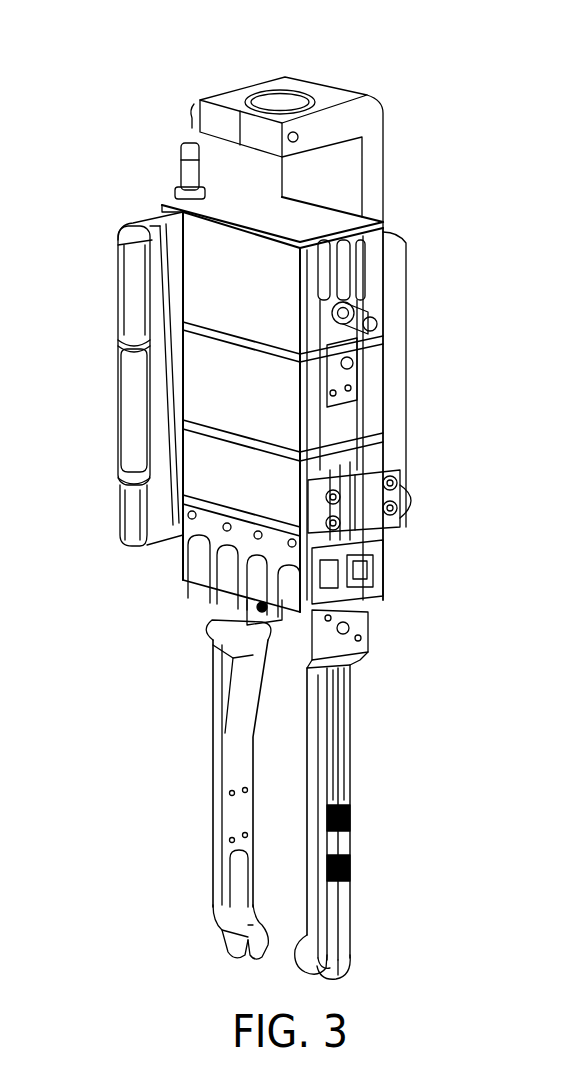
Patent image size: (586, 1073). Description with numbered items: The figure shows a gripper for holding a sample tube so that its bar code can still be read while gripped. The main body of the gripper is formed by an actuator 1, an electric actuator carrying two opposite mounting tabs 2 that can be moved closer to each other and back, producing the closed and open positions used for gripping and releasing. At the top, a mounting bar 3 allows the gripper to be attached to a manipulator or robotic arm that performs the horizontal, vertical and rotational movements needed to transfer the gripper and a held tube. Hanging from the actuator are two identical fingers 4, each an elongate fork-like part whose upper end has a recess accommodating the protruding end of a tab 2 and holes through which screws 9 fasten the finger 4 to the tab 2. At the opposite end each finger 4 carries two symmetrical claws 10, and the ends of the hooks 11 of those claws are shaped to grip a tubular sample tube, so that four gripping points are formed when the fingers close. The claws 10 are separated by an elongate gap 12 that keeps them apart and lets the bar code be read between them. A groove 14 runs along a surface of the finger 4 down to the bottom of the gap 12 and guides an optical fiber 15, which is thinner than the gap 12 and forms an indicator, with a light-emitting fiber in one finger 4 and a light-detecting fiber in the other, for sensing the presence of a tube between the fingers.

The actuator 1 is at (283, 418).
The mounting tab 2 is at (363, 622).
The mounting bar 3 is at (332, 98).
The finger 4 is at (143, 817).
The screw 9 is at (197, 635).
The claw 10 is at (212, 872).
The hook end 11 is at (227, 943).
The elongate gap 12 is at (340, 963).
The groove 14 is at (399, 847).
The optical fiber 15 is at (343, 893).